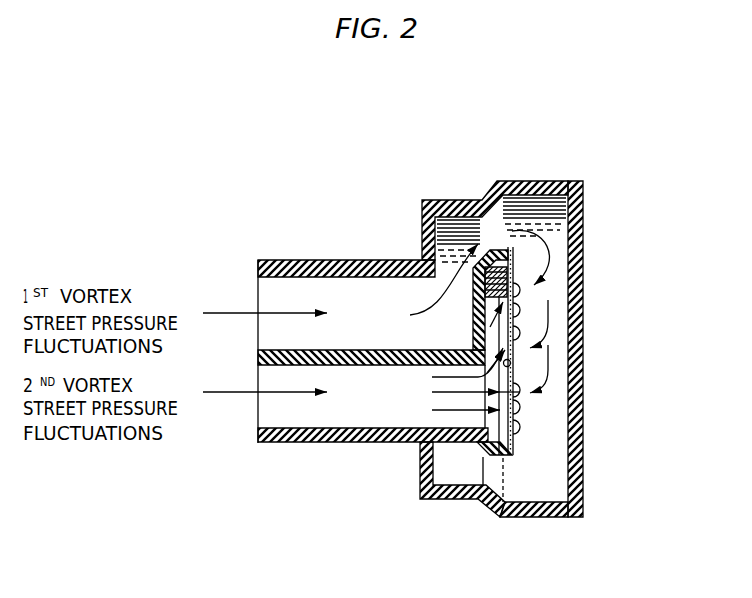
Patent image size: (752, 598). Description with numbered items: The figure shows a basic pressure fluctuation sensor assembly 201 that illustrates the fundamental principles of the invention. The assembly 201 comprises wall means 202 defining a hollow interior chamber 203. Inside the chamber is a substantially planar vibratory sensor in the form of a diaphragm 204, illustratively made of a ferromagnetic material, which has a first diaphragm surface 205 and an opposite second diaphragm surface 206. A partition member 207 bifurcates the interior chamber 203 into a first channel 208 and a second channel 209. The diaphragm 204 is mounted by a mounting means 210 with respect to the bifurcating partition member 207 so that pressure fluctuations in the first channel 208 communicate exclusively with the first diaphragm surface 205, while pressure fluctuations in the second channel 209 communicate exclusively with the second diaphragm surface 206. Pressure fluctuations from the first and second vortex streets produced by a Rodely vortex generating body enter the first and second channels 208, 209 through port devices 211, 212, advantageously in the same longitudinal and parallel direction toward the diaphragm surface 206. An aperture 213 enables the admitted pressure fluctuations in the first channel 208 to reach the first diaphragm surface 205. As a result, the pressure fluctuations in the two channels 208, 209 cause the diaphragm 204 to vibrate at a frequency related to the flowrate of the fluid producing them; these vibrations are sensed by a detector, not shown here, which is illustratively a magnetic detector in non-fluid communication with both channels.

The assembly 201 is at (428, 132).
The wall means 202 is at (302, 260).
The hollow interior chamber 203 is at (552, 439).
The diaphragm 204 is at (528, 348).
The first diaphragm surface 205 is at (500, 410).
The second diaphragm surface 206 is at (511, 366).
The partition member 207 is at (392, 368).
The first channel 208 is at (553, 228).
The second channel 209 is at (418, 410).
The mounting means 210 is at (447, 443).
The first port device 211 is at (278, 294).
The second port device 212 is at (276, 410).
The aperture 213 is at (445, 268).